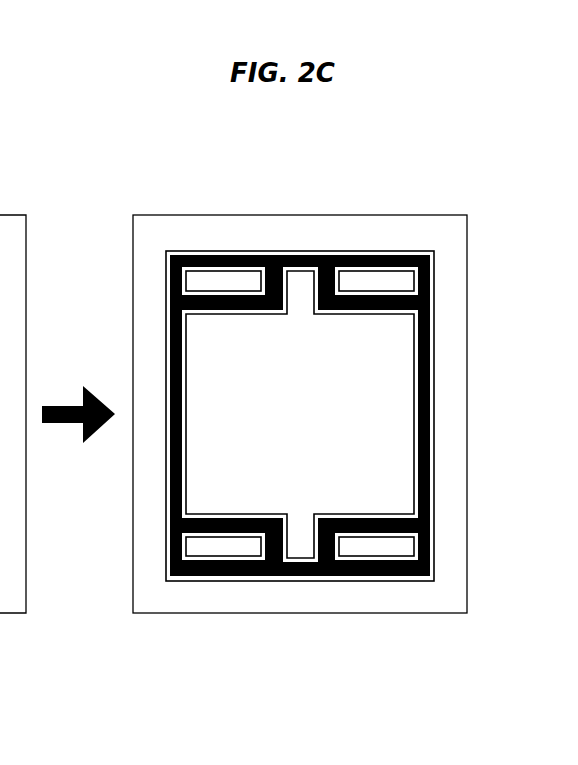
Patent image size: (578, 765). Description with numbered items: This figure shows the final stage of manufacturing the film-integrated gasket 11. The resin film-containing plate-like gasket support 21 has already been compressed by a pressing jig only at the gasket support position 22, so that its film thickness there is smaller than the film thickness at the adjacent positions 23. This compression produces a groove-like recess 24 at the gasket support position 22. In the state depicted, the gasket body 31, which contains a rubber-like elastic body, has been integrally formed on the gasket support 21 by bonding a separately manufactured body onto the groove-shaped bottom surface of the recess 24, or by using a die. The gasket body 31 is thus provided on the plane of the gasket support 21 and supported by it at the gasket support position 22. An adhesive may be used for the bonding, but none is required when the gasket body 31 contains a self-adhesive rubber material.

The film-integrated gasket 11 is at (287, 352).
The gasket support 21 is at (424, 228).
The gasket support position 22 is at (168, 338).
The adjacent positions 23 is at (200, 458).
The groove-like recess 24 is at (300, 578).
The gasket body 31 is at (430, 390).